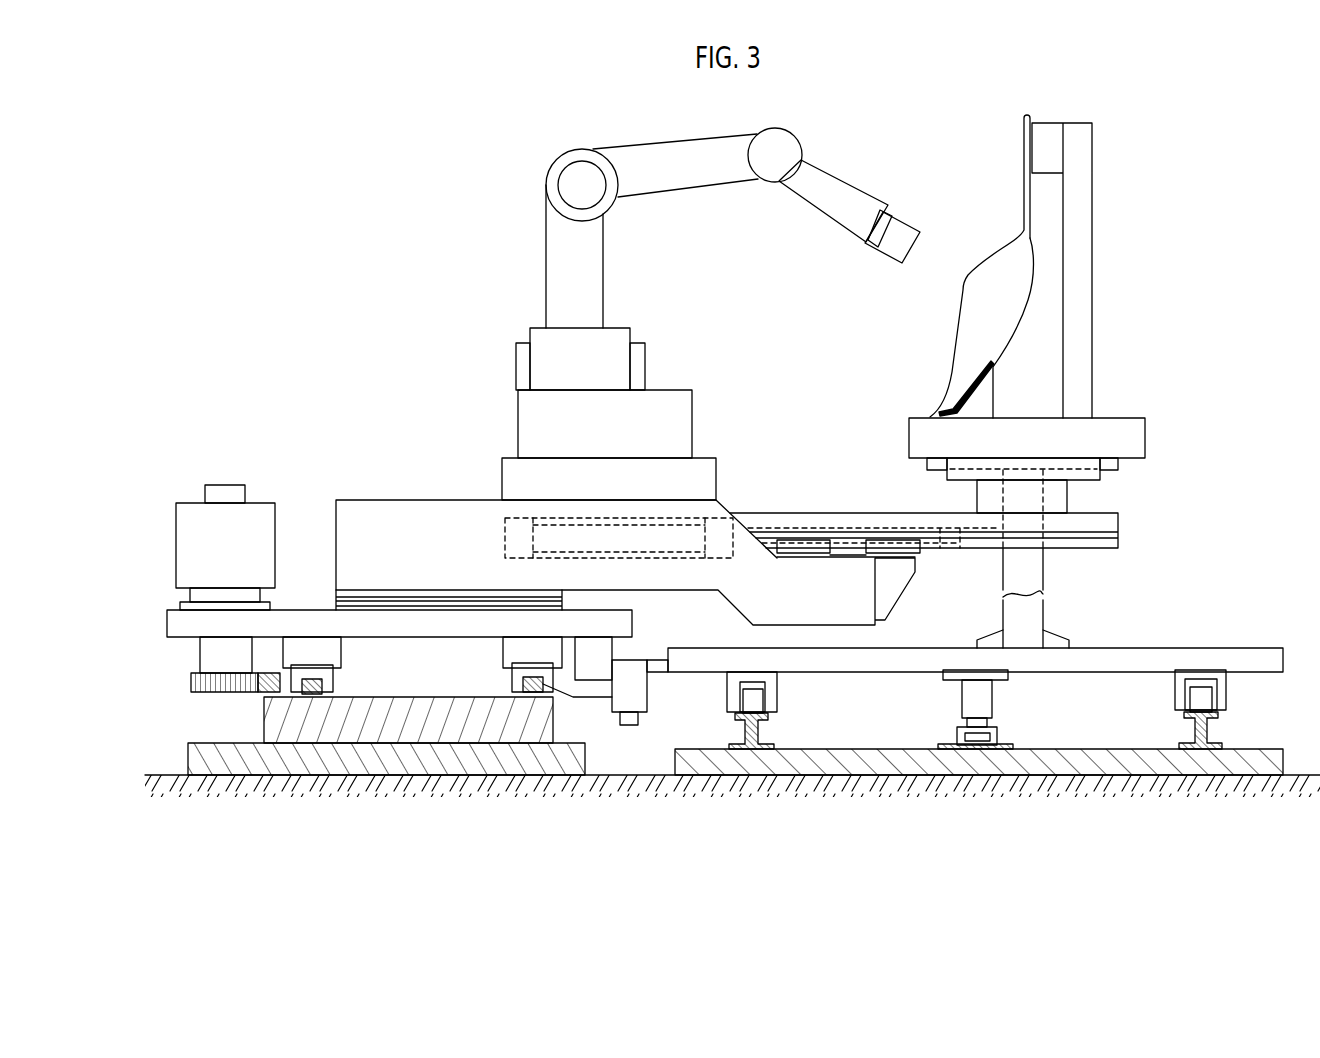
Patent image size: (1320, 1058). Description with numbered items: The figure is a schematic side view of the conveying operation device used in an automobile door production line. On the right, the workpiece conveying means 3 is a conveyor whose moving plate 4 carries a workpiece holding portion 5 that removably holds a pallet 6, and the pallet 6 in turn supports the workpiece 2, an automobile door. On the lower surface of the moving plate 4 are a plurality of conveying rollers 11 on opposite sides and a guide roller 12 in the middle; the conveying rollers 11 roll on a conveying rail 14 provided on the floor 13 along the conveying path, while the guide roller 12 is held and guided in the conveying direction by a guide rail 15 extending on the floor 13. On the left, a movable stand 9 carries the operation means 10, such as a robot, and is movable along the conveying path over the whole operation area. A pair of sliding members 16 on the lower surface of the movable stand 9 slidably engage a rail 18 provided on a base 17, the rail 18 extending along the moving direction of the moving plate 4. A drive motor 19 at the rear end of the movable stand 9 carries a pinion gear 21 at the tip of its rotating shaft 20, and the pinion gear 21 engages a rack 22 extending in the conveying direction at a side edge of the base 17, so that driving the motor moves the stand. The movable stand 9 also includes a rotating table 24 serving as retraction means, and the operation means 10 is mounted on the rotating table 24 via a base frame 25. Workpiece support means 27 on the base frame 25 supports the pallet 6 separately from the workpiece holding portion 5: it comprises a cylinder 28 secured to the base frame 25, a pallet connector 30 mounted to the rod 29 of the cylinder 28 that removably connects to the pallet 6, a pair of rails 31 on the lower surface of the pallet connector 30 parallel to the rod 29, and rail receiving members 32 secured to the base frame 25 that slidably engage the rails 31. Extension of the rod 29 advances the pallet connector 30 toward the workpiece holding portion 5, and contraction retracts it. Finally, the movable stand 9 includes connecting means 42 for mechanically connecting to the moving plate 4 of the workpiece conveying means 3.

The workpiece 2 is at (1006, 247).
The workpiece conveying means 3 is at (1105, 715).
The moving plate 4 is at (1200, 648).
The workpiece holding portion 5 is at (1118, 478).
The pallet 6 is at (1130, 418).
The movable stand 9 is at (307, 610).
The operation means 10 is at (546, 262).
The conveying roller 11 is at (750, 697).
The guide roller 12 is at (975, 733).
The floor 13 is at (1305, 773).
The conveying rail 14 is at (753, 730).
The guide rail 15 is at (997, 732).
The sliding member 16 is at (337, 682).
The base 17 is at (410, 735).
The rail 18 is at (522, 706).
The drive motor 19 is at (190, 503).
The rotating shaft 20 is at (210, 659).
The pinion gear 21 is at (191, 684).
The rack 22 is at (263, 687).
The rotating table 24 is at (342, 597).
The base frame 25 is at (428, 500).
The workpiece support means 27 is at (844, 496).
The cylinder 28 is at (648, 561).
The rod 29 is at (840, 522).
The pallet connector 30 is at (962, 482).
The rail 31 is at (1090, 549).
The rail receiving member 32 is at (797, 540).
The connecting means 42 is at (638, 744).